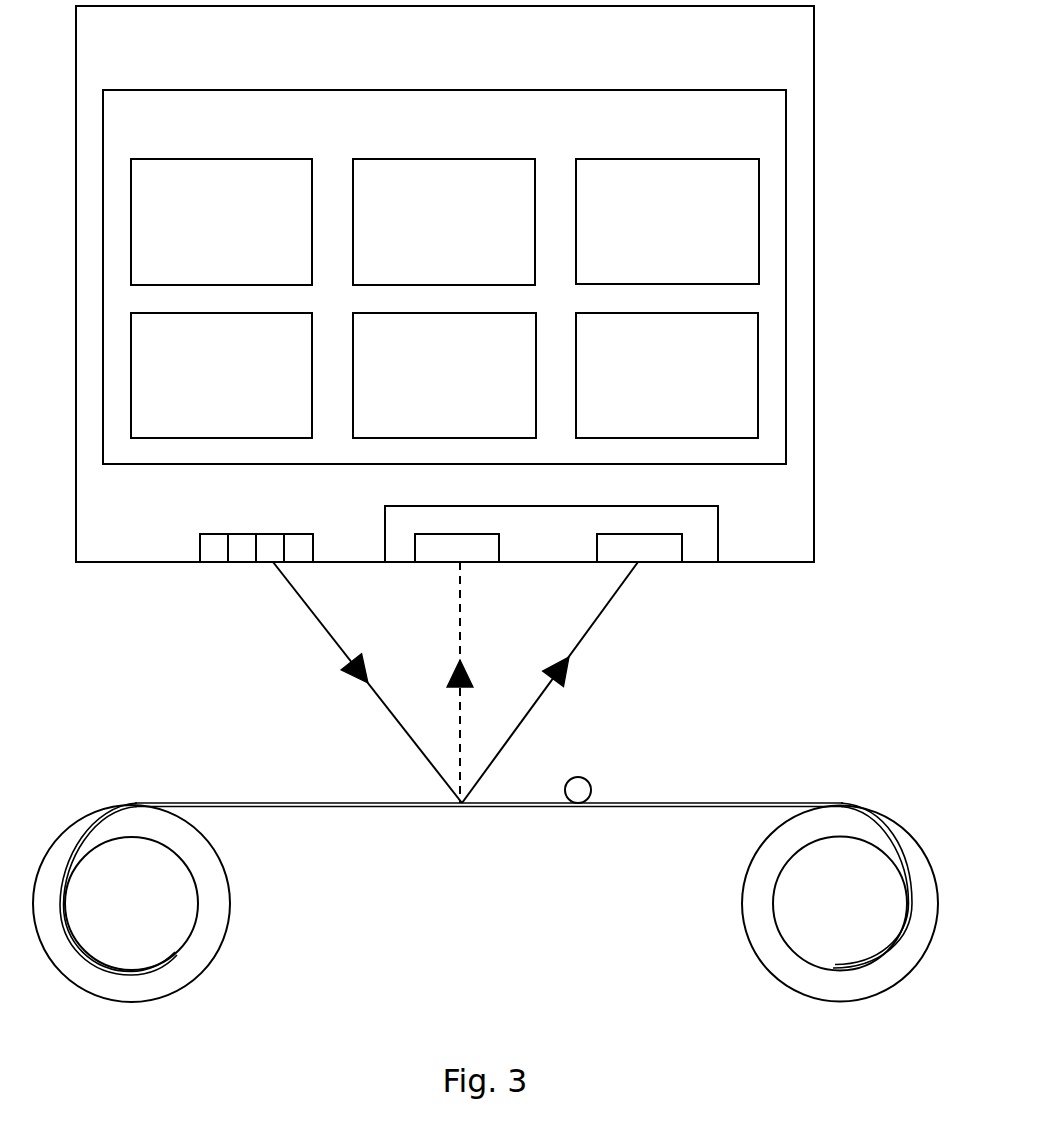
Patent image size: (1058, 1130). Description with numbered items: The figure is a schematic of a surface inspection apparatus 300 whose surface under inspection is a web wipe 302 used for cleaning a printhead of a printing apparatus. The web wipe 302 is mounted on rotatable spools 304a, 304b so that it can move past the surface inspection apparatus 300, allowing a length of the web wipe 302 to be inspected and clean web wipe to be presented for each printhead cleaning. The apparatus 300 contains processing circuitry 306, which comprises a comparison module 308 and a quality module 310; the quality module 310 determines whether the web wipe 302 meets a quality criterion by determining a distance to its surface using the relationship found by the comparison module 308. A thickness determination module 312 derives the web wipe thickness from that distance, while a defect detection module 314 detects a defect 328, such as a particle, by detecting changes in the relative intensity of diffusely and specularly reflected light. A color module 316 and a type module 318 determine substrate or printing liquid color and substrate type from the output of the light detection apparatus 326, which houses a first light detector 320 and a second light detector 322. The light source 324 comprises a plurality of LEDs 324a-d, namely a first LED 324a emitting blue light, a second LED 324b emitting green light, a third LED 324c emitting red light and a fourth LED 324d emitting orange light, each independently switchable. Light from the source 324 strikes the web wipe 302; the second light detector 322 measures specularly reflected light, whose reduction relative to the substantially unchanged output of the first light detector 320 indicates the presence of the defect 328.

The surface inspection apparatus 300 is at (426, 43).
The web wipe 302 is at (743, 802).
The spool 304a is at (230, 887).
The spool 304b is at (742, 885).
The processing circuitry 306 is at (426, 125).
The comparison module 308 is at (204, 207).
The quality module 310 is at (426, 207).
The thickness determination module 312 is at (649, 193).
The defect detection module 314 is at (204, 346).
The color module 316 is at (426, 360).
The type module 318 is at (649, 360).
The first light detector 320 is at (474, 552).
The second light detector 322 is at (664, 552).
The light source 324 is at (170, 537).
The first LED 324a is at (217, 550).
The second LED 324b is at (247, 553).
The third LED 324c is at (271, 553).
The fourth LED 324d is at (303, 553).
The light detection apparatus 326 is at (711, 551).
The defect 328 is at (590, 783).